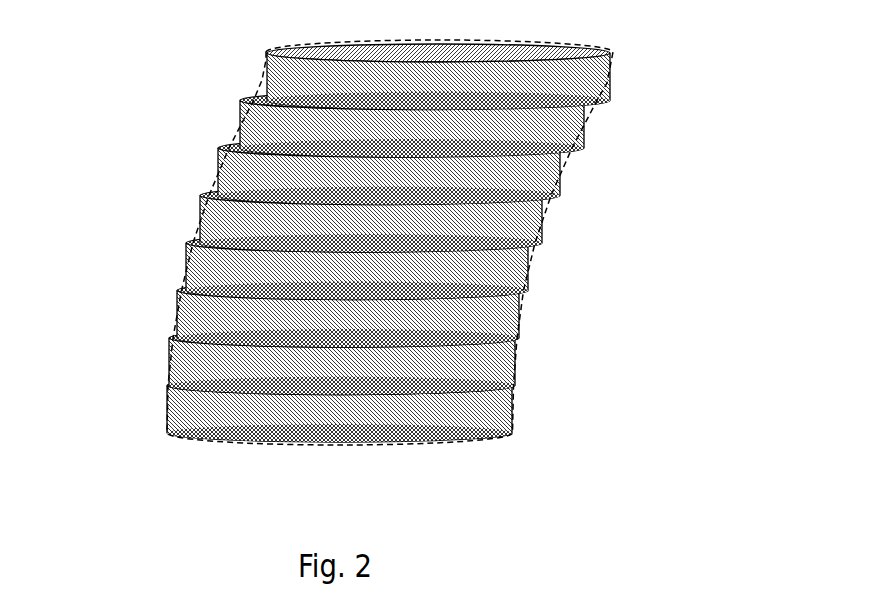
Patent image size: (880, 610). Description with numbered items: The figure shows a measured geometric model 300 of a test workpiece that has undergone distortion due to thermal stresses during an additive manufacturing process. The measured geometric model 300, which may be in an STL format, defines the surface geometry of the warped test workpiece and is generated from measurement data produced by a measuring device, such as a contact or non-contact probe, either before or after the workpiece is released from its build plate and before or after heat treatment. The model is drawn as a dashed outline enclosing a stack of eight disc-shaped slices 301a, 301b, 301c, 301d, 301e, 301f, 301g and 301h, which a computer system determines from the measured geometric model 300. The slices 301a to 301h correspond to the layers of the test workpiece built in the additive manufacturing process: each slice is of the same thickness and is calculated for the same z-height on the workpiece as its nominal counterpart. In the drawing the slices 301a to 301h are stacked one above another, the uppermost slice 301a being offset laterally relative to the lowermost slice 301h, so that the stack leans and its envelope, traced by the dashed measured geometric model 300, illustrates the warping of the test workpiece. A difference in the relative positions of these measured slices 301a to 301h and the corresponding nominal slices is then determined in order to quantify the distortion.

The measured geometric model 300 is at (625, 53).
The slice 301a is at (283, 81).
The slice 301b is at (262, 130).
The slice 301c is at (244, 177).
The slice 301d is at (224, 223).
The slice 301e is at (213, 268).
The slice 301f is at (196, 317).
The slice 301g is at (189, 365).
The slice 301h is at (184, 413).